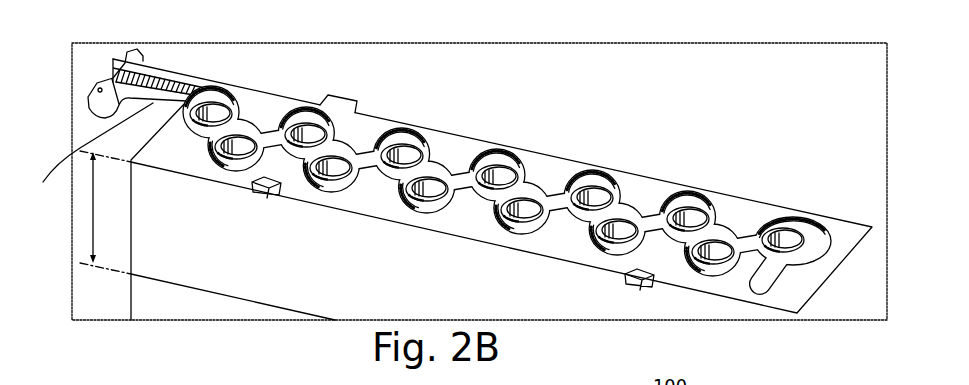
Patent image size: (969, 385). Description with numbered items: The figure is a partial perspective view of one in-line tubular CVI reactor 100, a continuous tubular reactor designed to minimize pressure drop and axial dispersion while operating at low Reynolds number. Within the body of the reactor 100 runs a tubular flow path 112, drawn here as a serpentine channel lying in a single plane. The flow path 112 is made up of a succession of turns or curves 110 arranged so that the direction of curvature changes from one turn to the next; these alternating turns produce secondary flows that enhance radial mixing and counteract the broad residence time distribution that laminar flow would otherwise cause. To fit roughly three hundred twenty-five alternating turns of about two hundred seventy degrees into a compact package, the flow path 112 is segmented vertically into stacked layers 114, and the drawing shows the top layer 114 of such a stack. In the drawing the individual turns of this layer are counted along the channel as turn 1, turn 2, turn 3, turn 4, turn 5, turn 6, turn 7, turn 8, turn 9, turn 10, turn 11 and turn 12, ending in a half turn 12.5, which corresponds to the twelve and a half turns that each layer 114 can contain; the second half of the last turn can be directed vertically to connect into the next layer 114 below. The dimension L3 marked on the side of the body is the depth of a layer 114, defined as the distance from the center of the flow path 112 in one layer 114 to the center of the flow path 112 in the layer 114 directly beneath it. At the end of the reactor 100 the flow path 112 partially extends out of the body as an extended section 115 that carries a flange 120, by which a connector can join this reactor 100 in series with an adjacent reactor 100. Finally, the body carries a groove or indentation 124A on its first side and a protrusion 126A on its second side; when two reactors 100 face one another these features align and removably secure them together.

The in-line tubular CVI reactor 100 is at (796, 92).
The turn or curve 110 is at (485, 149).
The tubular flow path 112 is at (152, 78).
The layer 114 is at (838, 203).
The extended section 115 is at (90, 161).
The flange 120 is at (88, 102).
The groove or indentation 124A is at (267, 198).
The protrusion 126A is at (352, 101).
The depth L3 is at (95, 207).
The cell 1 is at (222, 172).
The cell 2 is at (300, 112).
The cell 3 is at (320, 194).
The cell 4 is at (417, 128).
The cell 5 is at (411, 212).
The cell 6 is at (513, 153).
The cell 7 is at (505, 231).
The cell 8 is at (607, 175).
The cell 9 is at (601, 253).
The cell 10 is at (708, 197).
The cell 11 is at (690, 274).
The cell 12 is at (797, 217).
The end half cell 12.5 is at (779, 278).